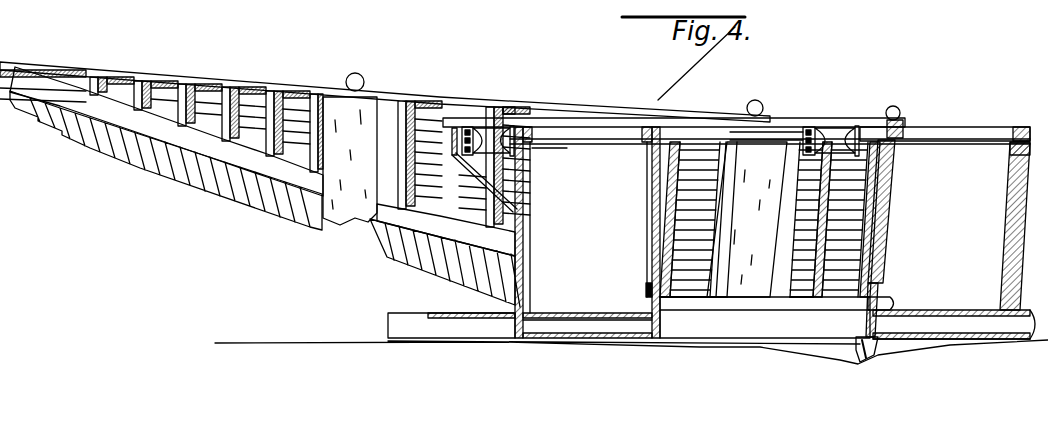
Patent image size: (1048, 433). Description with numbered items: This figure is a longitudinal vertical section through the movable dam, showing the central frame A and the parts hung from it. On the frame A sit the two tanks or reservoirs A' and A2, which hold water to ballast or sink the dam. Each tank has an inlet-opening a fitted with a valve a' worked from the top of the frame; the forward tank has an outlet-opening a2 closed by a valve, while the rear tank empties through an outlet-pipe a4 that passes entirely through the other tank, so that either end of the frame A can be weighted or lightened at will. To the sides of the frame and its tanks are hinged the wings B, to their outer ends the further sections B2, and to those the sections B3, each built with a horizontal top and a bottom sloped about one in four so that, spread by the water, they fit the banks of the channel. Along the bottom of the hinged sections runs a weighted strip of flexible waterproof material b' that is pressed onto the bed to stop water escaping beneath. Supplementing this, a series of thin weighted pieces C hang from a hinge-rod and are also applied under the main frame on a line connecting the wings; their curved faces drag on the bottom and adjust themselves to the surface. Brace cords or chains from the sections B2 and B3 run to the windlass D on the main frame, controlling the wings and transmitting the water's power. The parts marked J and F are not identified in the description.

The frame A is at (711, 318).
The tank A' is at (945, 218).
The tank A2 is at (736, 228).
The wing B is at (770, 219).
The hinged wing section B2 is at (440, 104).
The hinged wing section B3 is at (222, 80).
The hinged piece C is at (265, 199).
The windlass D is at (452, 142).
The hanging plate J is at (555, 197).
The inlet-opening a is at (644, 291).
The valve a' is at (751, 288).
The outlet-opening a2 is at (881, 295).
The outlet-pipe a4 is at (747, 288).
The wedge foot F is at (867, 322).
The flexible waterproof strip b' is at (262, 164).